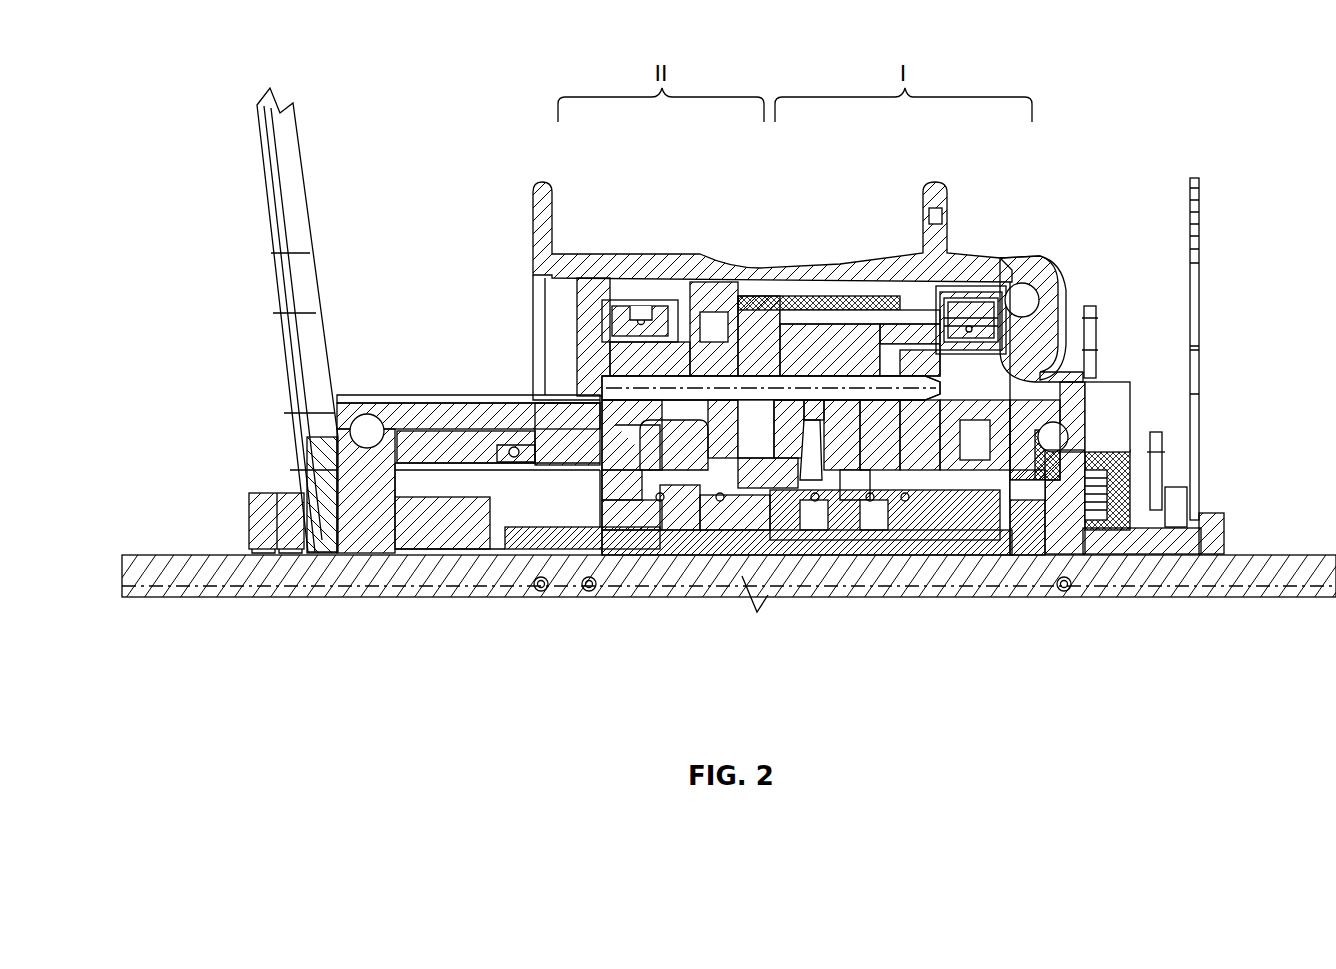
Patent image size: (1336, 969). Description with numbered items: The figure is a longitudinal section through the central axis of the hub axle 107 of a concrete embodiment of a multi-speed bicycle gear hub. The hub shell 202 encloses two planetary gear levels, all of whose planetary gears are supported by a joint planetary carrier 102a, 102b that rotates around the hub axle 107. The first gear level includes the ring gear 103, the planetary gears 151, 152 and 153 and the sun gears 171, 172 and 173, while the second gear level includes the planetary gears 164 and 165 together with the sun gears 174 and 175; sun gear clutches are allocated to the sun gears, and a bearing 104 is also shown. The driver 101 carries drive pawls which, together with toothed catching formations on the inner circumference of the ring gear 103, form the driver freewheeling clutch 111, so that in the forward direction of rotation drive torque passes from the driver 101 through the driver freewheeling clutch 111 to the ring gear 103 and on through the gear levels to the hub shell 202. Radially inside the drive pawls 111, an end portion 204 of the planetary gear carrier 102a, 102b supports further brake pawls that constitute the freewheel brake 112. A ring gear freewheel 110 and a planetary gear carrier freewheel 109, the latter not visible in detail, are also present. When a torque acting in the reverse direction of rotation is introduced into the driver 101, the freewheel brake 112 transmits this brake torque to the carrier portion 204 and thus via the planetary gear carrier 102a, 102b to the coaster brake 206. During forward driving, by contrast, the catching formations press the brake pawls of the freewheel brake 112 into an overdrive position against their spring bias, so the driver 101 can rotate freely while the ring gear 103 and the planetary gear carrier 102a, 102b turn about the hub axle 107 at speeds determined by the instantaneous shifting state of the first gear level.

The driver 101 is at (1030, 322).
The planetary gear carrier 102a is at (750, 380).
The planetary gear carrier 102b is at (771, 388).
The ring gear 103 is at (962, 297).
The bearing 104 is at (690, 306).
The hub axle 107 is at (1252, 563).
The planetary gear carrier freewheel 109 is at (543, 436).
The ring gear freewheel 110 is at (625, 312).
The driver freewheeling clutch 111 is at (970, 330).
The freewheel brake 112 is at (1020, 371).
The planetary gear 151 is at (785, 465).
The planetary gear 152 is at (837, 413).
The planetary gear 153 is at (885, 413).
The planetary gear 164 is at (668, 413).
The planetary gear 165 is at (720, 433).
The sun gear 171 is at (800, 420).
The sun gear 172 is at (857, 470).
The sun gear 173 is at (900, 420).
The sun gear 174 is at (663, 470).
The sun gear 175 is at (757, 467).
The hub shell 202 is at (578, 262).
The portion of the planetary gear carrier 204 is at (993, 398).
The coaster brake 206 is at (467, 443).